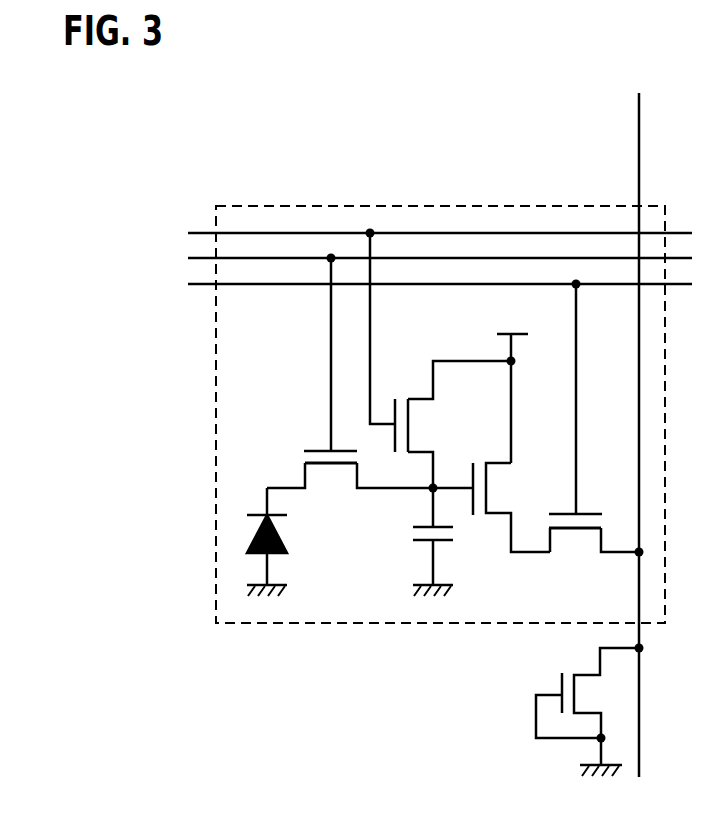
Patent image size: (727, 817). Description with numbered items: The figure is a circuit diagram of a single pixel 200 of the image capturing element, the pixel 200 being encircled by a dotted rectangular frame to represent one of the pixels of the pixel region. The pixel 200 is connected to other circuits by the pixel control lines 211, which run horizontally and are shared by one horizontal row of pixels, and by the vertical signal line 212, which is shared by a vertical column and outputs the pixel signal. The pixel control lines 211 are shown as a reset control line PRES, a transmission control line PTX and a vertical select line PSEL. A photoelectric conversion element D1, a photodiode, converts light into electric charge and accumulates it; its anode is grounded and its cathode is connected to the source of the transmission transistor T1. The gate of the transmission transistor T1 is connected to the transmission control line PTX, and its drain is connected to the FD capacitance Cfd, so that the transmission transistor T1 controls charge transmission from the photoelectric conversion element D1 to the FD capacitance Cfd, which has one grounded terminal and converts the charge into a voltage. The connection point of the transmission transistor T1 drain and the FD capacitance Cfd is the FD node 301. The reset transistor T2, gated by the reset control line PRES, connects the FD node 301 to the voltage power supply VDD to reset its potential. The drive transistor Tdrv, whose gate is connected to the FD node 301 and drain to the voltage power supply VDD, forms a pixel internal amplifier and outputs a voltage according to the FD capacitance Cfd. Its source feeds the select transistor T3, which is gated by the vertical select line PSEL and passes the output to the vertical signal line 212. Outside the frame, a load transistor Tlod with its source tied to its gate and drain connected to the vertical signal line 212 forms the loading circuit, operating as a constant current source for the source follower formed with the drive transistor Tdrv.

The pixel 200 is at (213, 400).
The pixel control line 211 is at (360, 257).
The vertical signal line 212 is at (640, 420).
The FD node 301 is at (430, 493).
The reset control line PRES is at (402, 232).
The transmission control line PTX is at (402, 258).
The vertical select line PSEL is at (402, 284).
The transmission transistor T1 is at (317, 448).
The reset transistor T2 is at (395, 406).
The select transistor T3 is at (588, 508).
The drive transistor Tdrv is at (472, 475).
The load transistor Tlod is at (561, 682).
The photoelectric conversion element D1 is at (285, 542).
The FD capacitance Cfd is at (453, 541).
The voltage power supply VDD is at (503, 334).